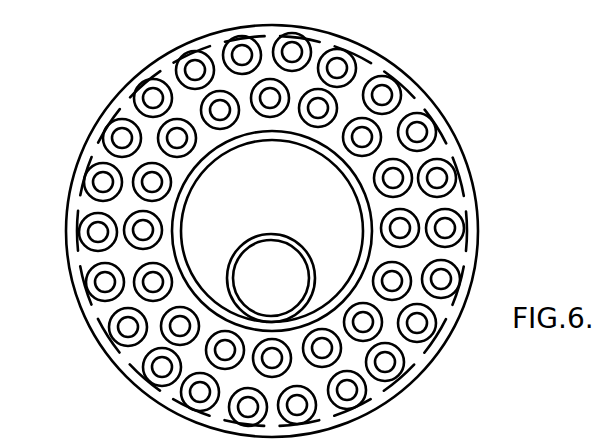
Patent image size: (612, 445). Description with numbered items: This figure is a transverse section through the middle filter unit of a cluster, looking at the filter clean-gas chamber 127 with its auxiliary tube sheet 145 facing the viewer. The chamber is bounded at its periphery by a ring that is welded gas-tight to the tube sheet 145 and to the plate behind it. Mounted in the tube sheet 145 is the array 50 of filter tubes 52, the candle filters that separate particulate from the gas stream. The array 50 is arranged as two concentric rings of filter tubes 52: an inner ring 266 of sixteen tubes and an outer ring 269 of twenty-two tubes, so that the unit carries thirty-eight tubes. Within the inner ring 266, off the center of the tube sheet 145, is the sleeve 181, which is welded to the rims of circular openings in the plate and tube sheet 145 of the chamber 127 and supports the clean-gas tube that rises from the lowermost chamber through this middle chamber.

The filter clean-gas chamber 127 is at (478, 195).
The tube sheet 145 is at (100, 312).
The sleeve 181 is at (298, 243).
The inner ring 266 is at (133, 112).
The outer ring 269 is at (133, 208).
The filter tube 52 is at (128, 343).
The array 50 is at (354, 352).